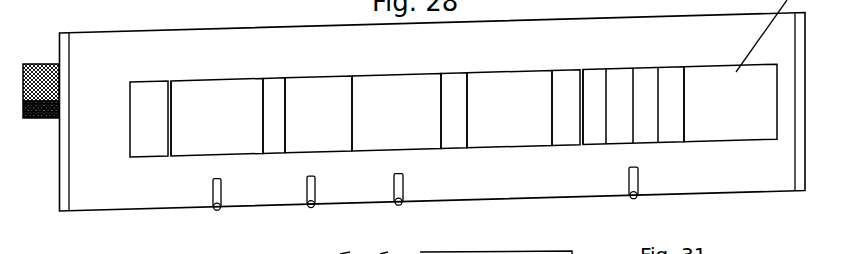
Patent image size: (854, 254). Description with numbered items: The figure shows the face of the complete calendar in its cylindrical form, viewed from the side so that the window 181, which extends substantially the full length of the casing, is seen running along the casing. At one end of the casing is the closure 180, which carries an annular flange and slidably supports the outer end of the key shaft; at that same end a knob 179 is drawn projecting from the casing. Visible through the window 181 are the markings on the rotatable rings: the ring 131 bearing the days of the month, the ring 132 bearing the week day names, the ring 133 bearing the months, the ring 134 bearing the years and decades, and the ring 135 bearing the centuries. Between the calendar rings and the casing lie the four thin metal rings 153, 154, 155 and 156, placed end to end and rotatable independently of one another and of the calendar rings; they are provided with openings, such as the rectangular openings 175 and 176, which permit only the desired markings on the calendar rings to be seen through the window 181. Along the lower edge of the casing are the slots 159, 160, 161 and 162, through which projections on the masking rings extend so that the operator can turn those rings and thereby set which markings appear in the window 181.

In FIG. 28, the knob 179 is at (40, 64).
In FIG. 28, the closure 180 is at (62, 152).
In FIG. 28, the rotatable ring 135 is at (160, 150).
In FIG. 28, the ring 156 is at (200, 93).
In FIG. 28, the rotatable ring 134 is at (273, 86).
In FIG. 28, the ring 155 is at (328, 88).
In FIG. 28, the ring 154 is at (385, 83).
In FIG. 28, the rotatable ring 133 is at (458, 142).
In FIG. 28, the ring 153 is at (517, 127).
In FIG. 28, the rotatable ring 132 is at (568, 143).
In FIG. 28, the rotatable ring 131 is at (670, 132).
In FIG. 28, the window 181 is at (735, 140).
In FIG. 28, the slot 162 is at (222, 208).
In FIG. 28, the slot 161 is at (317, 203).
In FIG. 28, the slot 160 is at (407, 203).
In FIG. 28, the slot 159 is at (643, 197).
In FIG. 31, the rectangular opening 175 is at (347, 253).
In FIG. 31, the rectangular opening 176 is at (386, 252).